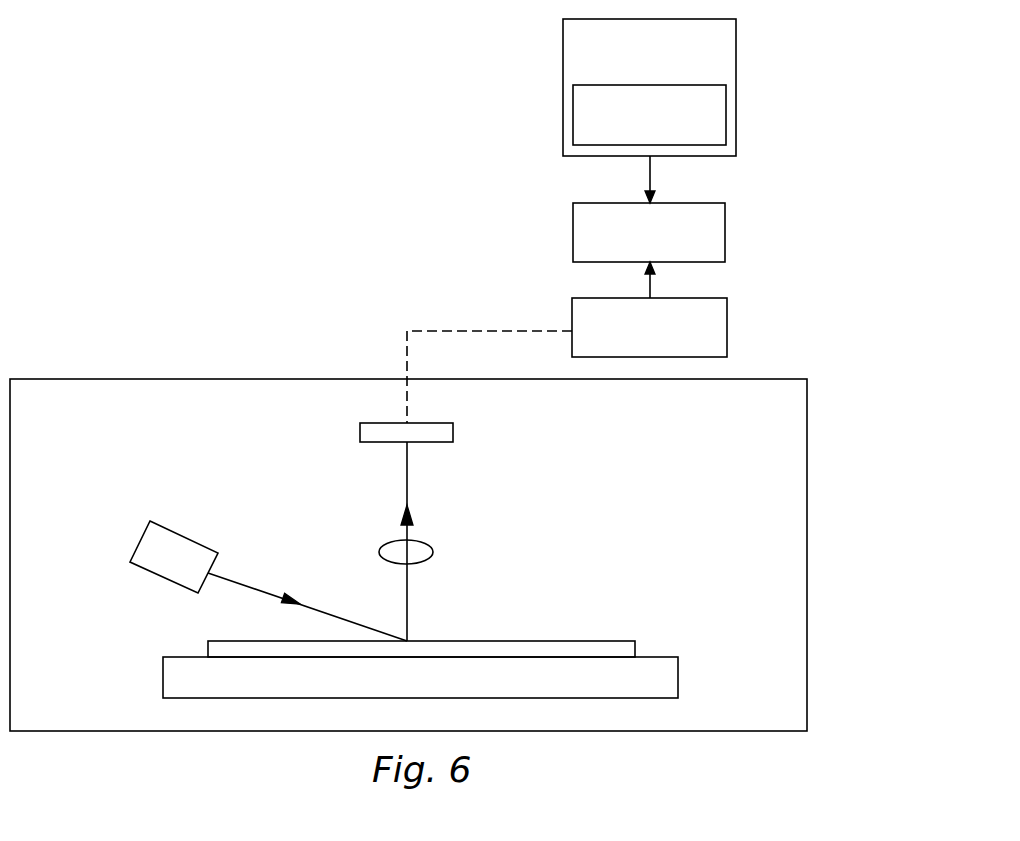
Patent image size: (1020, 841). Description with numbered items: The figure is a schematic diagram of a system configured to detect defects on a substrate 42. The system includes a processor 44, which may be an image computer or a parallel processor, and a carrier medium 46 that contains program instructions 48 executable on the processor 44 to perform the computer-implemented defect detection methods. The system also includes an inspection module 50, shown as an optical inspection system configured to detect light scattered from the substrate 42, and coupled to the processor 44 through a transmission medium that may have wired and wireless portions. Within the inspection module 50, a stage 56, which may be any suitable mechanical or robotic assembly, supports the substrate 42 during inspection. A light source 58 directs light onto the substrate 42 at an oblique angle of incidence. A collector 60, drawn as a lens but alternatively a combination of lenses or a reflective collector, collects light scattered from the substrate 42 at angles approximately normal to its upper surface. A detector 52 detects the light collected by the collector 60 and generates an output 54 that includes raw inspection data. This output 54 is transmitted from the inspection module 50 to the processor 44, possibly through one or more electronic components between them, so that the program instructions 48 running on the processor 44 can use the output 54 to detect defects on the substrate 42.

The substrate 42 is at (636, 641).
The processor 44 is at (725, 232).
The carrier medium 46 is at (736, 53).
The program instructions 48 is at (726, 112).
The inspection module 50 is at (807, 495).
The detector 52 is at (453, 432).
The output 54 is at (727, 330).
The stage 56 is at (660, 687).
The light source 58 is at (142, 537).
The collector 60 is at (433, 550).